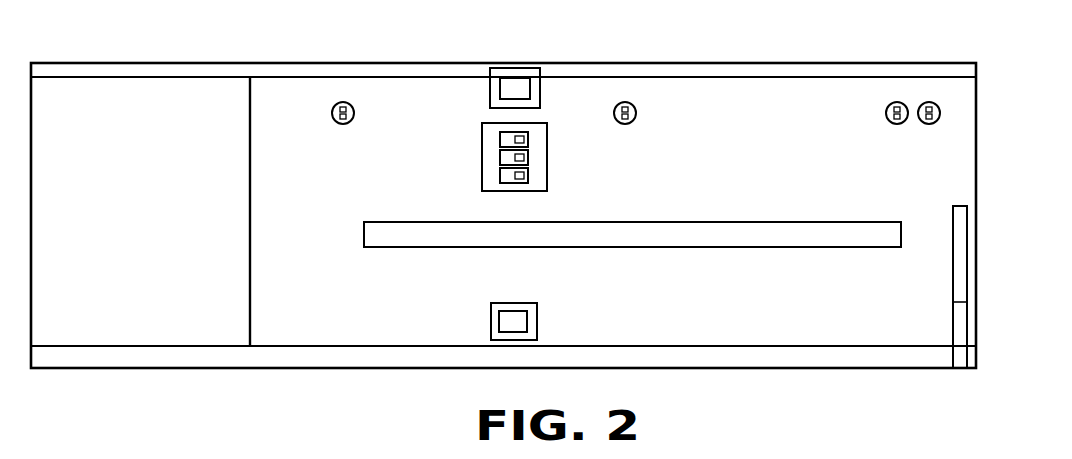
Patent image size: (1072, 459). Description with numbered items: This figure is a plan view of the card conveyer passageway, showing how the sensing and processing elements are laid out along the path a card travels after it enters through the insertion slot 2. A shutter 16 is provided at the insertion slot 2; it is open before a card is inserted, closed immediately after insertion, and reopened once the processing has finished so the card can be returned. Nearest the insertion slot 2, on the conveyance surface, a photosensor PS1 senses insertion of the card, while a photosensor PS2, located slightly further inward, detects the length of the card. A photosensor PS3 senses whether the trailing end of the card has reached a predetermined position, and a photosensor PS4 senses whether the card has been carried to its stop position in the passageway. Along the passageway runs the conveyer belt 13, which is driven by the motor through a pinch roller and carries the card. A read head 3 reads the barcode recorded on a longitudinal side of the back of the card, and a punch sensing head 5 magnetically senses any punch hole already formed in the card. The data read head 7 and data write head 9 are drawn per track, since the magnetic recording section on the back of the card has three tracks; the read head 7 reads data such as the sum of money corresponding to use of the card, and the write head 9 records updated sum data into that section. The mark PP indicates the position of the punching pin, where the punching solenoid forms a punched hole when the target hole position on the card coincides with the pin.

The insertion slot 2 is at (976, 226).
The read head 3 is at (515, 86).
The punch sensing head 5 is at (500, 322).
The data read head 7 is at (500, 139).
The data write head 9 is at (551, 156).
The conveyer belt 13 is at (898, 222).
The shutter 16 is at (962, 284).
The position of punching pin PP is at (625, 323).
The photosensor PS1 is at (930, 102).
The photosensor PS2 is at (897, 102).
The photosensor PS3 is at (629, 103).
The photosensor PS4 is at (345, 102).